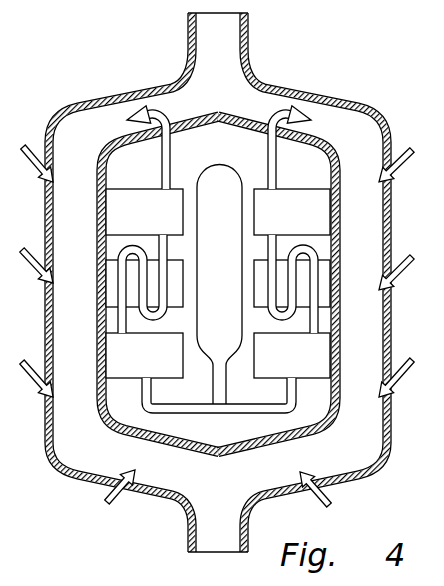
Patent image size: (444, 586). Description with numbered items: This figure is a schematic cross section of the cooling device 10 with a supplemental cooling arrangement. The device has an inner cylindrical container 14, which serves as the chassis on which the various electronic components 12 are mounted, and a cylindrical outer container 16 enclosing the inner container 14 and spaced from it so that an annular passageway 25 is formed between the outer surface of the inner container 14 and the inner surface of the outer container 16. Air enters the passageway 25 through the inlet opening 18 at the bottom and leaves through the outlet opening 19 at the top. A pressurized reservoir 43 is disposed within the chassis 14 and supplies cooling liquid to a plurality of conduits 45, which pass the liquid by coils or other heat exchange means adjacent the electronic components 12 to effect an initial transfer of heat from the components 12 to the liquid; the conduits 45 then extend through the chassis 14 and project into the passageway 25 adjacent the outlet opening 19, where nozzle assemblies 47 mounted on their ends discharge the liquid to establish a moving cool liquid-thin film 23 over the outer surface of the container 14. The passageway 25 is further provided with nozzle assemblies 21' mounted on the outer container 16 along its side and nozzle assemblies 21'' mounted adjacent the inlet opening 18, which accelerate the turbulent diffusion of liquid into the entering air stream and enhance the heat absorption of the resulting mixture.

The cooling device 10 is at (227, 282).
The electronic components 12 is at (152, 220).
The inner cylindrical container 14 is at (196, 128).
The outer container 16 is at (106, 96).
The inlet opening 18 is at (223, 536).
The outlet opening 19 is at (223, 31).
The nozzle assemblies 21' is at (220, 255).
The nozzle assemblies 21'' is at (223, 488).
The cool liquid-thin film 23 is at (128, 133).
The annular passageway 25 is at (84, 383).
The reservoir 43 is at (228, 298).
The conduits 45 is at (162, 160).
The nozzle assemblies 47 is at (137, 112).